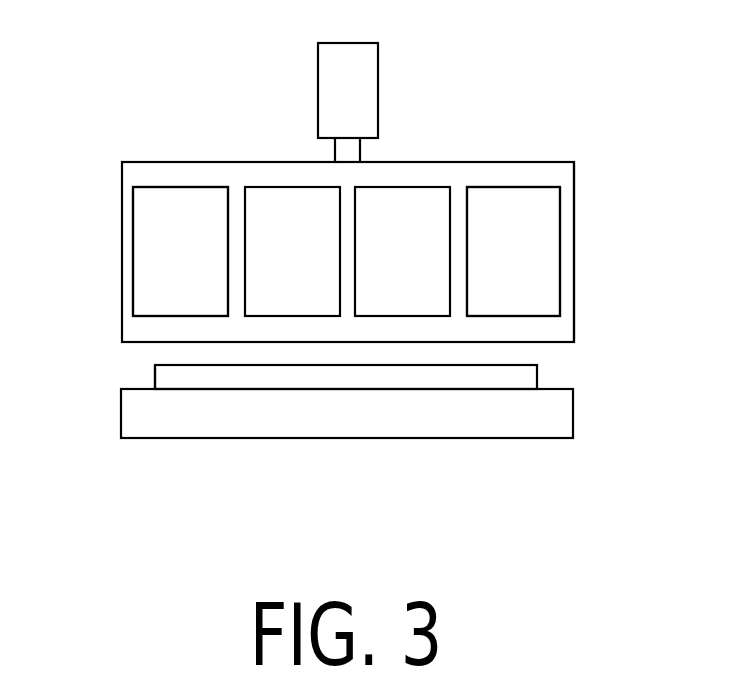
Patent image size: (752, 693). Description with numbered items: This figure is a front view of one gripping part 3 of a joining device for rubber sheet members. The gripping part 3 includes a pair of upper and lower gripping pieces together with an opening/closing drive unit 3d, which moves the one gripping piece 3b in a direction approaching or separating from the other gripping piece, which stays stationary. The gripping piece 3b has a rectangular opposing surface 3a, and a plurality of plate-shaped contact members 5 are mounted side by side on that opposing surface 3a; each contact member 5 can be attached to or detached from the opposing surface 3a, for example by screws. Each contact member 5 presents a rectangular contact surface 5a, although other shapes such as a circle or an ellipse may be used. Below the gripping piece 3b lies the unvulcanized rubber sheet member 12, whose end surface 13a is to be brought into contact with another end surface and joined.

The gripping part 3 is at (459, 161).
The opposing surface 3a is at (222, 175).
The gripping piece 3b is at (571, 185).
The opening/closing drive unit 3d is at (369, 90).
The contact member 5 is at (178, 197).
The contact surface 5a is at (145, 236).
The rubber sheet member 12 is at (155, 372).
The end surface 13a is at (414, 377).